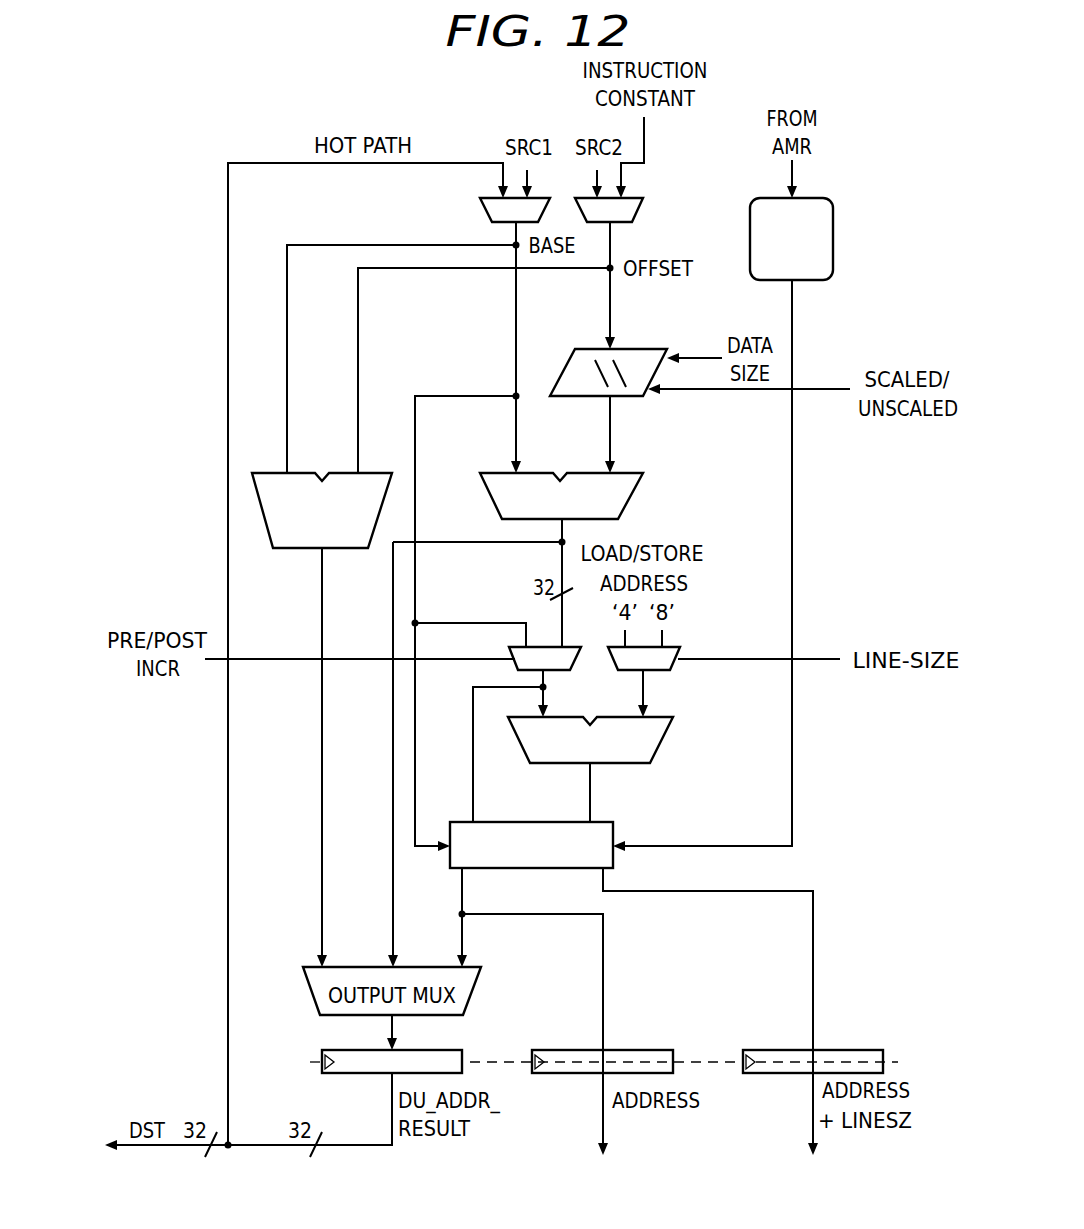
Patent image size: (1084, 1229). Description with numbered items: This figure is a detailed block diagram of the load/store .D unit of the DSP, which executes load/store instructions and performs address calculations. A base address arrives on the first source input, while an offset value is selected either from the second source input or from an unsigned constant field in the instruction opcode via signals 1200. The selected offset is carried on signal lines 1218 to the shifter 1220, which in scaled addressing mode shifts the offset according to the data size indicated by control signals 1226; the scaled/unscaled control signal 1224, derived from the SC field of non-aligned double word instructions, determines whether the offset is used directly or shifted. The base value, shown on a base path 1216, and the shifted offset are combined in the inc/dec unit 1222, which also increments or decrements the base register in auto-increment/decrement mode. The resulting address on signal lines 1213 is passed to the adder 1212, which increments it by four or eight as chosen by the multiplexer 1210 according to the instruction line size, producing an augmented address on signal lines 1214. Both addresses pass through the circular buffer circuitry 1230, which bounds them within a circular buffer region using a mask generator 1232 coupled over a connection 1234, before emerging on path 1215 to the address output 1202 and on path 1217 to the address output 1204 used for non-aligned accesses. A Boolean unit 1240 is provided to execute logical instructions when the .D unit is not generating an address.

The offset selection from instruction field 1200 is at (644, 146).
The offset signal lines 1218 is at (610, 250).
The mask generator 1232 is at (833, 238).
The mask generator output to circular address unit 1234 is at (793, 742).
The data size control signals 1226 is at (690, 358).
The scaled/unscaled control signal 1224 is at (813, 392).
The shifter 1220 is at (628, 398).
The base signal path 1216 is at (515, 375).
The inc/dec unit 1222 is at (636, 497).
The Boolean unit 1240 is at (297, 550).
The signal lines 1213 is at (475, 792).
The multiplexer 1210 is at (672, 670).
The adder 1212 is at (665, 740).
The signal lines 1214 is at (593, 792).
The circular buffer circuitry 1230 is at (614, 858).
The address output path 1215 is at (604, 978).
The address output 1202 is at (604, 1118).
The address plus line size output path 1217 is at (814, 978).
The address output 1204 is at (812, 1120).